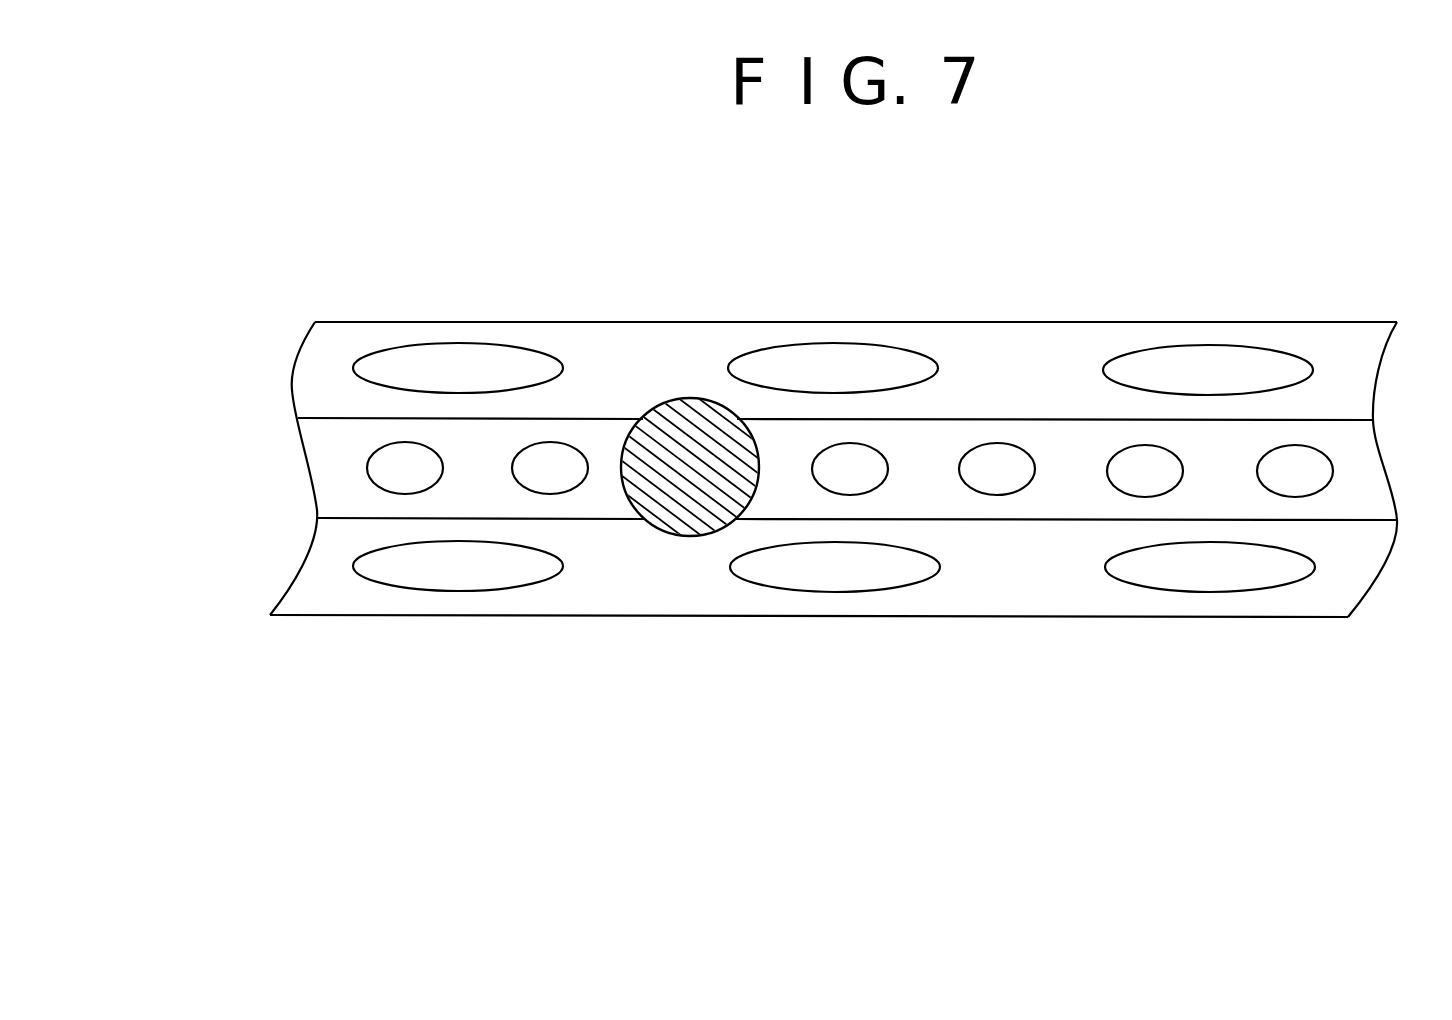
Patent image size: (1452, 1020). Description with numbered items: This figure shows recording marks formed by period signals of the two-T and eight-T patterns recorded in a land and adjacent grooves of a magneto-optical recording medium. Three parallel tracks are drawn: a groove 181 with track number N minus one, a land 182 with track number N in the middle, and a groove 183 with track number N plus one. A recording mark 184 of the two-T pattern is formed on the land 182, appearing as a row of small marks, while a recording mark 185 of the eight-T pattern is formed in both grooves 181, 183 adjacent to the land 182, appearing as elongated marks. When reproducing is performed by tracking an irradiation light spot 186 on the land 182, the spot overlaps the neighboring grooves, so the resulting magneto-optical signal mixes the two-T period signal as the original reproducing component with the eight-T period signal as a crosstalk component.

The groove 181 is at (307, 380).
The land 182 is at (330, 482).
The groove 183 is at (320, 573).
The recording mark of the 2T pattern 184 is at (1000, 463).
The recording mark of the 8T pattern 185 is at (888, 568).
The irradiation light spot 186 is at (692, 503).